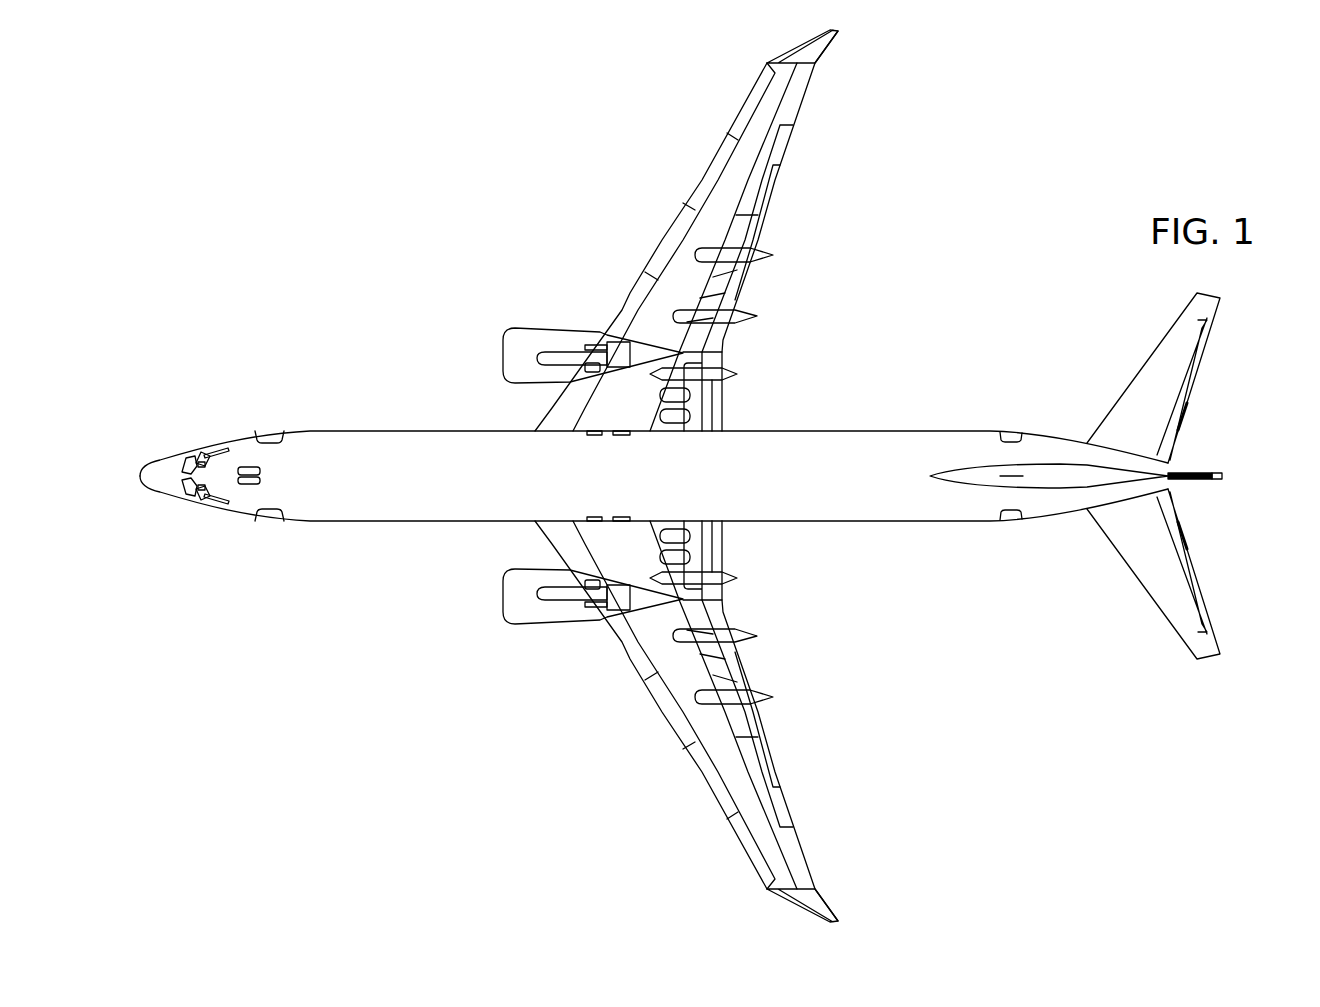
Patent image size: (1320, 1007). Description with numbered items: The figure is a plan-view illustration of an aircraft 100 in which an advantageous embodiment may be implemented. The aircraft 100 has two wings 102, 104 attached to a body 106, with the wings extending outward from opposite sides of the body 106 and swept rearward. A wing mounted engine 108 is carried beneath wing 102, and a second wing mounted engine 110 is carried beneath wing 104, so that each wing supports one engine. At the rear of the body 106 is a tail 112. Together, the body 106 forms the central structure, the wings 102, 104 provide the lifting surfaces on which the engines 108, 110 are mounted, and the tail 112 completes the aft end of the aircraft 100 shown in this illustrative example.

The aircraft 100 is at (350, 178).
The wing 102 is at (762, 222).
The wing 104 is at (798, 845).
The body 106 is at (330, 430).
The wing mounted engine 108 is at (543, 335).
The wing mounted engine 110 is at (545, 625).
The tail 112 is at (1152, 382).